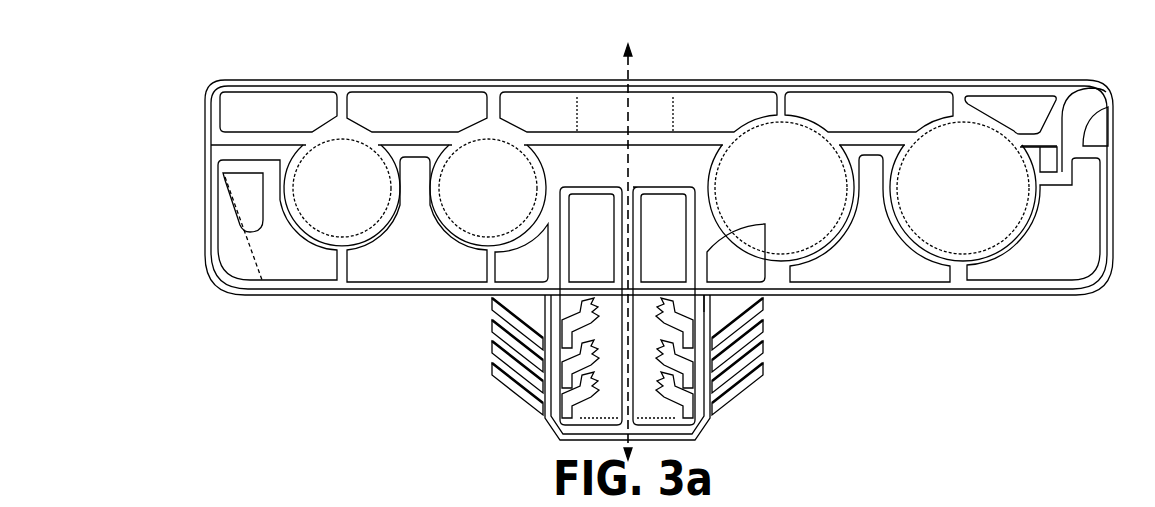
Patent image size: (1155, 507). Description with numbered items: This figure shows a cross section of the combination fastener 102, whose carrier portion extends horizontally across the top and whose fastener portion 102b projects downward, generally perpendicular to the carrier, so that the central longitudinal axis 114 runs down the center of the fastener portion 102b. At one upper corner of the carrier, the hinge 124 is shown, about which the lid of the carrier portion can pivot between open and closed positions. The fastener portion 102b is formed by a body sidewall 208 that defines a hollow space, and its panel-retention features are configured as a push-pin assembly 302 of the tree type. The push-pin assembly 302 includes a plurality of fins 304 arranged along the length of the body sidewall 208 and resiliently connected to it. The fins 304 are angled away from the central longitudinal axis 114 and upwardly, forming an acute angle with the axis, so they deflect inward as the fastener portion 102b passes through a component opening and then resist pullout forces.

The combination fastener 102 is at (134, 106).
The fastener portion 102b is at (947, 297).
The central longitudinal axis 114 is at (622, 66).
The hinge 124 is at (1106, 80).
The body sidewall 208 is at (704, 306).
The push-pin assembly 302 is at (466, 349).
The fins 304 is at (785, 385).